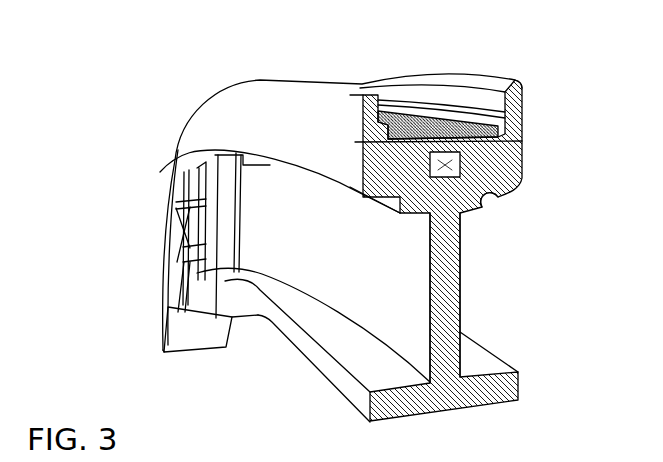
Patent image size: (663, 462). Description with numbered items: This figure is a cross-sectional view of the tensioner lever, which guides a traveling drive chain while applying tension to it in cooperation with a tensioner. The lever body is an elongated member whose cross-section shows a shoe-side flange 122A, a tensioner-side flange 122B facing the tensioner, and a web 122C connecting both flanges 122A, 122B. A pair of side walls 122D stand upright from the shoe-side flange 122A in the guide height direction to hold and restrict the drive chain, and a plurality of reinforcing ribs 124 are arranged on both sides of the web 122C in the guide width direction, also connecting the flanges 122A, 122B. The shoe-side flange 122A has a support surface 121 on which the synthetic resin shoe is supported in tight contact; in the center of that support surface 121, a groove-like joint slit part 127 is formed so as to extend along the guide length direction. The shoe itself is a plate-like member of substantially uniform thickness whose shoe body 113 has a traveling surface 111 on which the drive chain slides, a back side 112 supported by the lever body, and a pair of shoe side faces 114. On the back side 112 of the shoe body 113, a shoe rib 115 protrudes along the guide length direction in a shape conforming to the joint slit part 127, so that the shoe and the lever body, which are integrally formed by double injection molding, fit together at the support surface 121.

The traveling surface 111 is at (397, 110).
The back side 112 is at (487, 126).
The shoe body 113 is at (523, 168).
The shoe side faces 114 is at (355, 142).
The shoe rib 115 is at (497, 190).
The support surface 121 is at (445, 178).
The shoe-side flange 122A is at (213, 150).
The tensioner-side flange 122B is at (307, 358).
The web 122C is at (335, 273).
The side walls 122D is at (250, 80).
The reinforcing ribs 124 is at (175, 262).
The joint slit part 127 is at (497, 188).